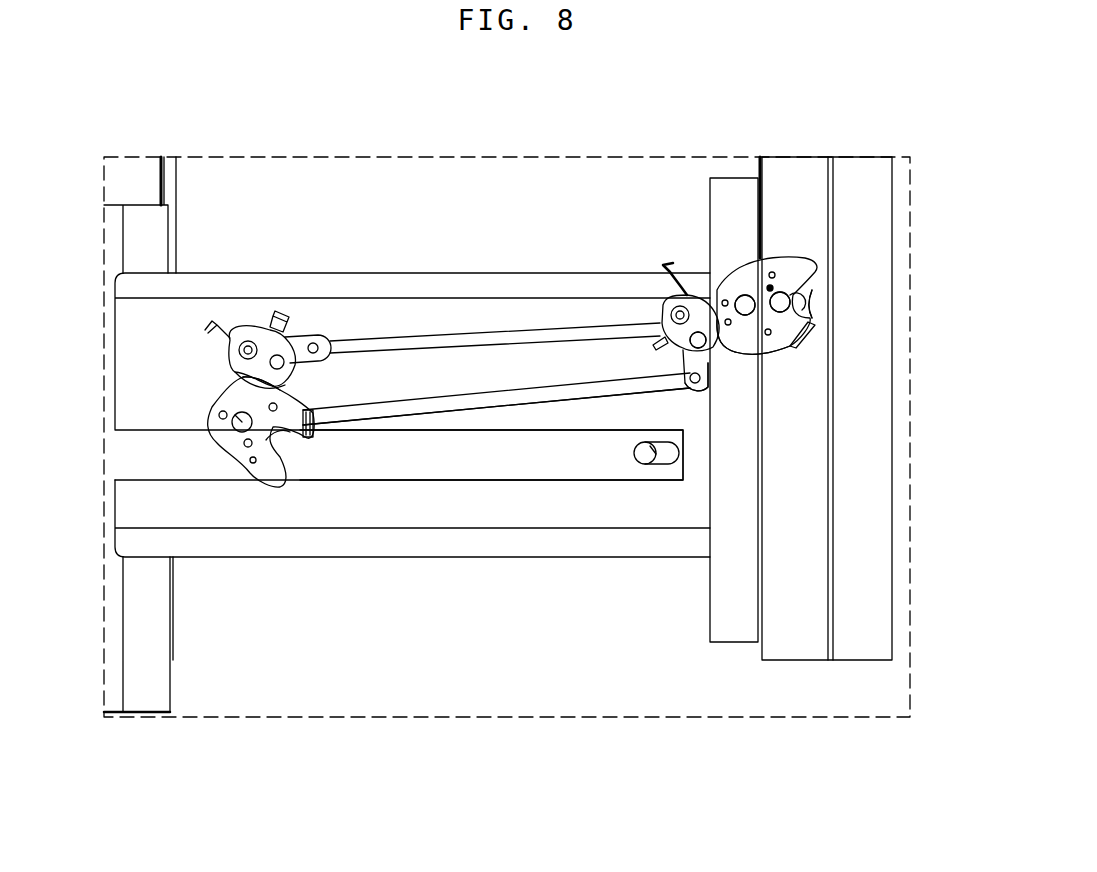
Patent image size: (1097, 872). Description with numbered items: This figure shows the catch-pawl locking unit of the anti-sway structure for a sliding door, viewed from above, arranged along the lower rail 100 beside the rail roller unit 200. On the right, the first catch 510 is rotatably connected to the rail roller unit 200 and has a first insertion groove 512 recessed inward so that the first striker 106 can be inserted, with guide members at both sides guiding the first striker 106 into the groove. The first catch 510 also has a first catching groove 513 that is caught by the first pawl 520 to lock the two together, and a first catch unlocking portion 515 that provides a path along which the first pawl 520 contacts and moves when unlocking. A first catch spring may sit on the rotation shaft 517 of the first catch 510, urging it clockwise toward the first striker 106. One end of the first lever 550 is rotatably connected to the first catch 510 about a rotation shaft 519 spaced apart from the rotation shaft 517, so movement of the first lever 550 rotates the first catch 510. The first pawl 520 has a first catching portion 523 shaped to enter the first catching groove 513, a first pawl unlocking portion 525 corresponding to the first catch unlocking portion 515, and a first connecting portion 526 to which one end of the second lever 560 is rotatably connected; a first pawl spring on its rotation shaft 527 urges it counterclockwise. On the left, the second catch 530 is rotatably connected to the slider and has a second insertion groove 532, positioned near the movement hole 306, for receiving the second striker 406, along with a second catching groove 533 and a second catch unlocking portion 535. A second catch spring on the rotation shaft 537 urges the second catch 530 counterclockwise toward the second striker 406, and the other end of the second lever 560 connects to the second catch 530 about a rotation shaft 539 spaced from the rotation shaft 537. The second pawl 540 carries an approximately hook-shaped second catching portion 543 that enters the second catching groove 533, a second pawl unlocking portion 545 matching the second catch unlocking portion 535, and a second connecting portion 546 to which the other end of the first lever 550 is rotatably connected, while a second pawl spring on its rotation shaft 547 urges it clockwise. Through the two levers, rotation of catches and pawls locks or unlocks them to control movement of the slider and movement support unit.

The lower rail 100 is at (808, 633).
The rail roller unit 200 is at (718, 621).
The movement hole 306 is at (467, 455).
The second striker 406 is at (645, 453).
The first catch 510 is at (815, 262).
The first striker 106 is at (800, 268).
The first insertion groove 512 is at (813, 296).
The first catching groove 513 is at (760, 340).
The first catch unlocking portion 515 is at (765, 358).
The rotation shaft of the first catch 517 is at (746, 296).
The rotation shaft of the first lever 519 is at (722, 297).
The first pawl 520 is at (651, 304).
The first catching portion 523 is at (764, 358).
The first pawl unlocking portion 525 is at (710, 305).
The first connecting portion 526 is at (758, 377).
The rotation shaft of the first pawl 527 is at (667, 310).
The second catch 530 is at (206, 453).
The second insertion groove 532 is at (322, 440).
The second catching groove 533 is at (238, 376).
The second catch unlocking portion 535 is at (312, 410).
The rotation shaft of the second catch 537 is at (222, 398).
The rotation shaft of the second lever 539 is at (236, 447).
The second pawl 540 is at (285, 302).
The second catching portion 543 is at (422, 400).
The second pawl unlocking portion 545 is at (218, 335).
The second connecting portion 546 is at (315, 343).
The rotation shaft of the second pawl 547 is at (257, 337).
The first lever 550 is at (500, 338).
The second lever 560 is at (430, 393).